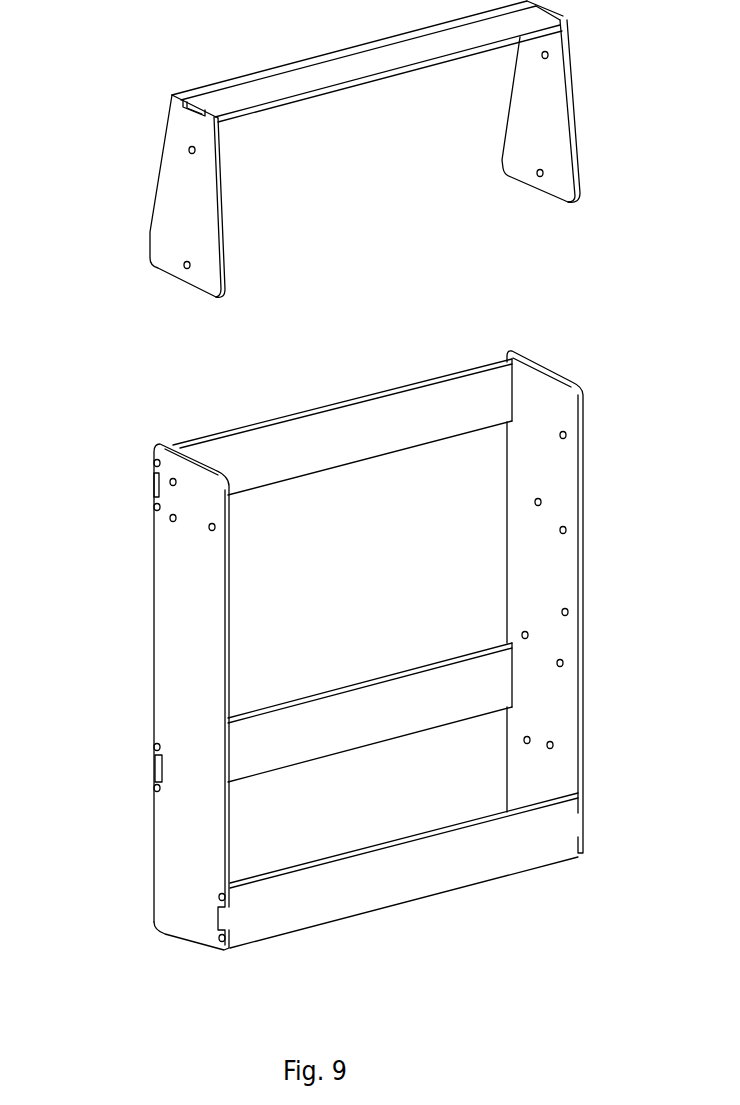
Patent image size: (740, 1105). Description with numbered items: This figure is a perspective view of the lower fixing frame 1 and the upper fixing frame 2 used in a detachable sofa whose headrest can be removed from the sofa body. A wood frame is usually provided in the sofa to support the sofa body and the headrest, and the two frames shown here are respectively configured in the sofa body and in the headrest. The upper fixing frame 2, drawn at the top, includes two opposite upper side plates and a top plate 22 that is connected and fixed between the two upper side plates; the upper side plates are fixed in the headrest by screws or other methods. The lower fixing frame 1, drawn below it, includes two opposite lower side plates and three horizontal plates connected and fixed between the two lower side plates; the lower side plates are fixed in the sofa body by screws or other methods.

The lower fixing frame 1 is at (364, 659).
The upper fixing frame 2 is at (354, 149).
The top plate 22 is at (350, 52).